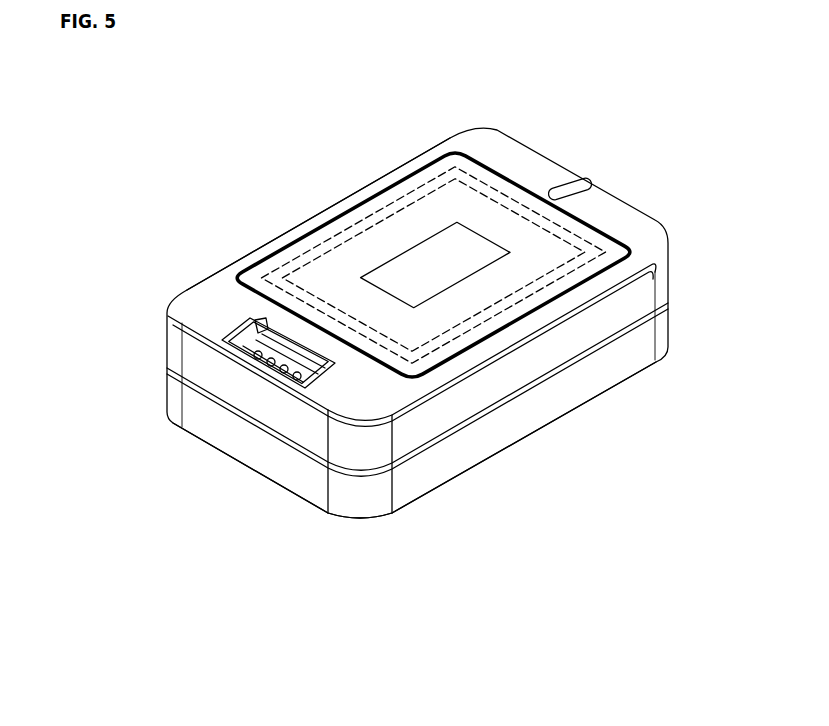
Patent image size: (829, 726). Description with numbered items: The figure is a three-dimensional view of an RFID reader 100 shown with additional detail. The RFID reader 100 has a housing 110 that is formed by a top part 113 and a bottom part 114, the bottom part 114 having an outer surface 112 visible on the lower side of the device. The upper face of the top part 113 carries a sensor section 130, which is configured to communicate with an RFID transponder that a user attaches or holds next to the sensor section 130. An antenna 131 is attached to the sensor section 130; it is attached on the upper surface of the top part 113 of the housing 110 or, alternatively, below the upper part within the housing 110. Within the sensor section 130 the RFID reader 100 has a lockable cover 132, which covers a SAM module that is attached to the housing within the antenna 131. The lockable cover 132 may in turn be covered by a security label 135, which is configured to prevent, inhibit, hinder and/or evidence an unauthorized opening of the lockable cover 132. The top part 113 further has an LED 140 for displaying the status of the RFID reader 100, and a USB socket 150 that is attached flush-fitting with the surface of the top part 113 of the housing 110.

The RFID reader 100 is at (686, 209).
The housing 110 is at (505, 152).
The outer surface 112 is at (633, 357).
The top part 113 is at (212, 270).
The bottom part 114 is at (375, 520).
The sensor section 130 is at (433, 341).
The antenna 131 is at (432, 340).
The lockable cover 132 is at (480, 273).
The security label 135 is at (387, 348).
The LED 140 is at (567, 188).
The USB socket 150 is at (277, 357).